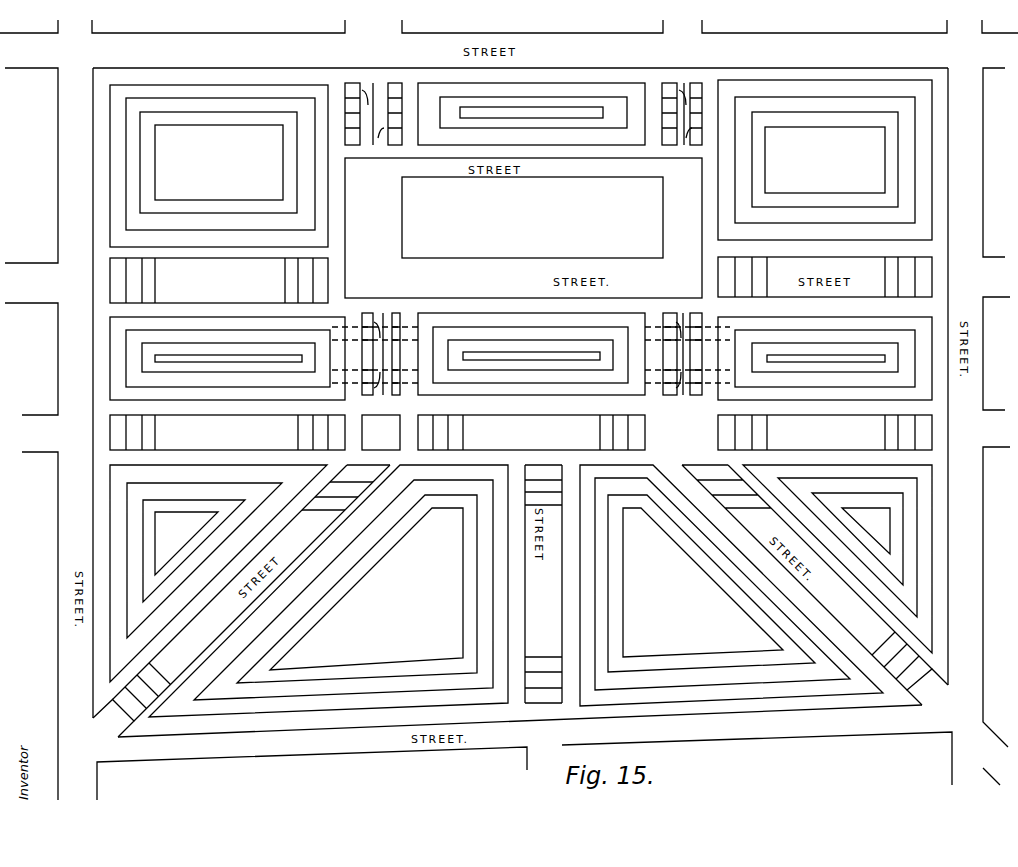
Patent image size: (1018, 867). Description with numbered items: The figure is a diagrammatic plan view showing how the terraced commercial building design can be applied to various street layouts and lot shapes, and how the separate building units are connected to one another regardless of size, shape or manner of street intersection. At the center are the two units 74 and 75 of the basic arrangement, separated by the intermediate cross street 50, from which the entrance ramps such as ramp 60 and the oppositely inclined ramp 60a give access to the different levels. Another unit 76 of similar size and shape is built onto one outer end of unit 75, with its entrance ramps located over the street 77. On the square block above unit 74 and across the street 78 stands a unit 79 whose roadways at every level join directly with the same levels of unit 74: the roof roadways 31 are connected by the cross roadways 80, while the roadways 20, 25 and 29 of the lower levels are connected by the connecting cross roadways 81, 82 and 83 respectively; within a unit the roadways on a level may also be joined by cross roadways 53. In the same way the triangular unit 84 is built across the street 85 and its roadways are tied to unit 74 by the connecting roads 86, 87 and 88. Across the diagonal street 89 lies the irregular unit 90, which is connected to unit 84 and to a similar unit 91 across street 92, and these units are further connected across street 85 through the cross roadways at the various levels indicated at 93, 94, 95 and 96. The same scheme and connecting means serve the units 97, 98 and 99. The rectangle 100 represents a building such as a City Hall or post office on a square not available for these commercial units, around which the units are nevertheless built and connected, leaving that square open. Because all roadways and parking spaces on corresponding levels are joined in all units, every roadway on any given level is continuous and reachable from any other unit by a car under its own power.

The automobile roadway and parking space 20 is at (150, 174).
The automobile roadway and parking space 25 is at (133, 153).
The automobile roadway and parking space 29 is at (117, 197).
The roof roadway 31 is at (519, 626).
The intermediate street 50 is at (373, 132).
The cross roadways 53 is at (530, 354).
The ramp 60 is at (385, 318).
The ramp 60a is at (374, 396).
The unit 74 is at (227, 432).
The unit 75 is at (531, 432).
The unit 76 is at (802, 419).
The street 77 is at (682, 134).
The street 78 is at (307, 280).
The unit 79 is at (92, 170).
The cross roadways 80 is at (93, 283).
The connecting cross roadway 81 is at (150, 279).
The connecting cross roadway 82 is at (135, 270).
The connecting cross roadway 83 is at (110, 298).
The triangular unit 84 is at (93, 545).
The street 85 is at (292, 432).
The connecting road 86 is at (143, 424).
The connecting road 87 is at (130, 441).
The connecting road 88 is at (110, 436).
The diagonal street 89 is at (252, 593).
The irregular unit 90 is at (344, 728).
The unit 91 is at (690, 716).
The street 92 is at (543, 584).
The cross roadway 93 is at (455, 437).
The cross roadway 94 is at (448, 420).
The cross roadway 95 is at (389, 471).
The cross roadway 96 is at (406, 435).
The unit 97 is at (948, 555).
The unit 98 is at (948, 166).
The unit 99 is at (560, 88).
The rectangle 100 is at (532, 217).